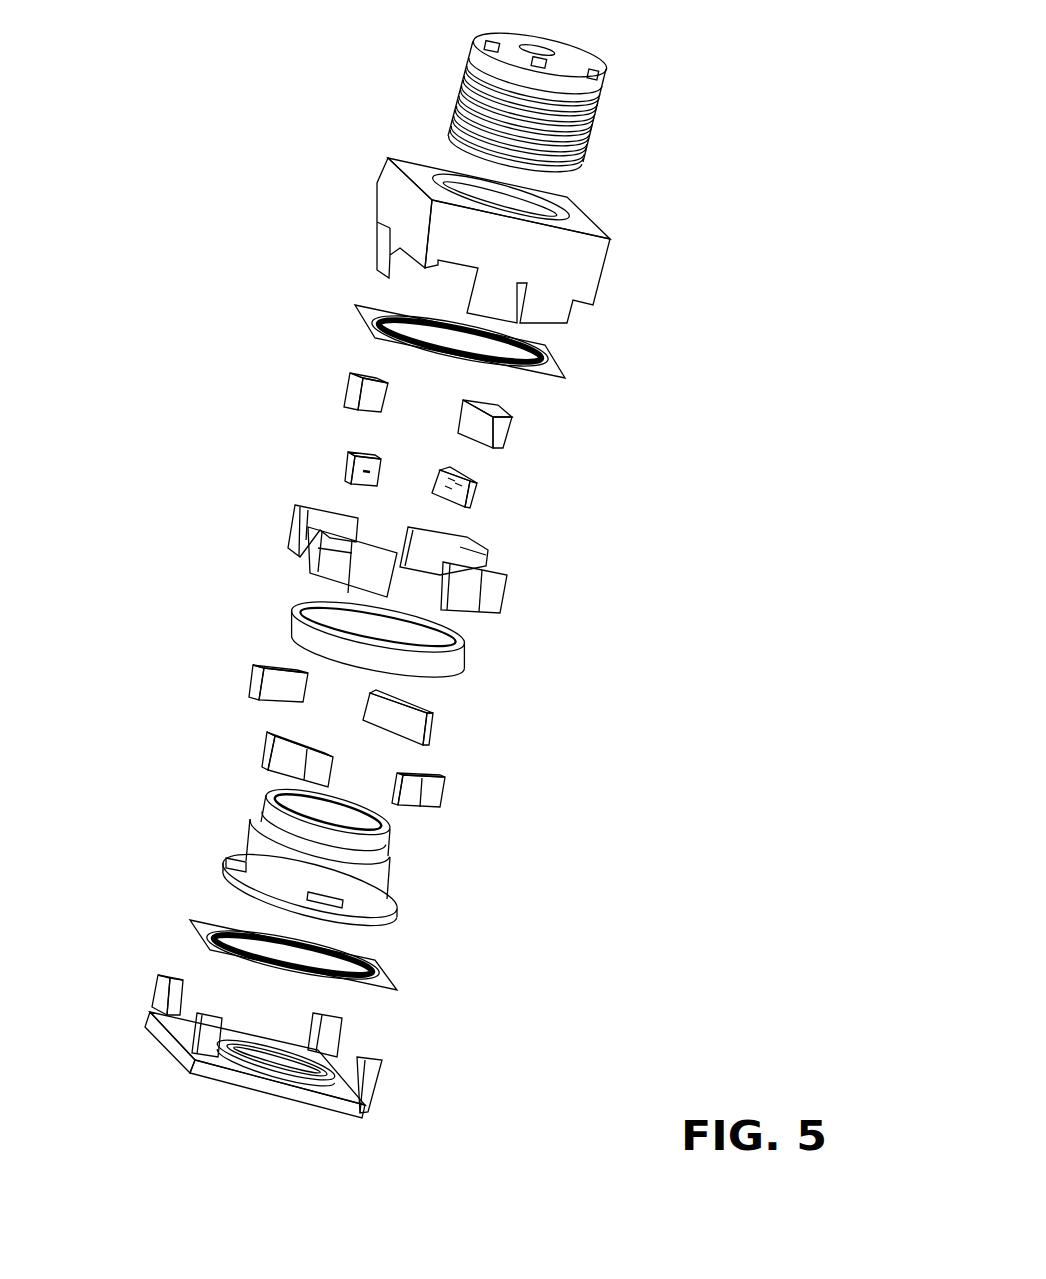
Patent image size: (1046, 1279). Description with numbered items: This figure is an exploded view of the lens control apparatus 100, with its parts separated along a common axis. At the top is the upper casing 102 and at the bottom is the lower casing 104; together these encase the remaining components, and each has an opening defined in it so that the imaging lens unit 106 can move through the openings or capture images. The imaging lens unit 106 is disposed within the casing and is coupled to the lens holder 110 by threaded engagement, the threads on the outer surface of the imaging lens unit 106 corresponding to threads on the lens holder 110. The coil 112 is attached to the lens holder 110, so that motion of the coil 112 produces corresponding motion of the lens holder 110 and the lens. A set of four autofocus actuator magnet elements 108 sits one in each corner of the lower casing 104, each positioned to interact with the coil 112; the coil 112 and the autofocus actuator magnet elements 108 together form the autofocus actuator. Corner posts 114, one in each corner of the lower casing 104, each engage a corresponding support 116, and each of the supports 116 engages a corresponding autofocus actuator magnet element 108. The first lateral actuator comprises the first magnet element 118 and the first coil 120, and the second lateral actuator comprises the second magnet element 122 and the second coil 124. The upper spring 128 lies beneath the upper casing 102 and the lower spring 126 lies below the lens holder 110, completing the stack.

The lens control apparatus 100 is at (117, 708).
The upper casing 102 is at (562, 260).
The lower casing 104 is at (297, 1085).
The imaging lens unit 106 is at (573, 103).
The autofocus actuator magnet elements 108 is at (287, 760).
The lens holder 110 is at (365, 878).
The coil 112 is at (440, 662).
The corner posts 114 is at (207, 1038).
The supports 116 is at (430, 542).
The first magnet element 118 is at (365, 402).
The first coil 120 is at (362, 458).
The second magnet element 122 is at (510, 418).
The second coil 124 is at (473, 482).
The lower spring 126 is at (385, 982).
The upper spring 128 is at (548, 356).